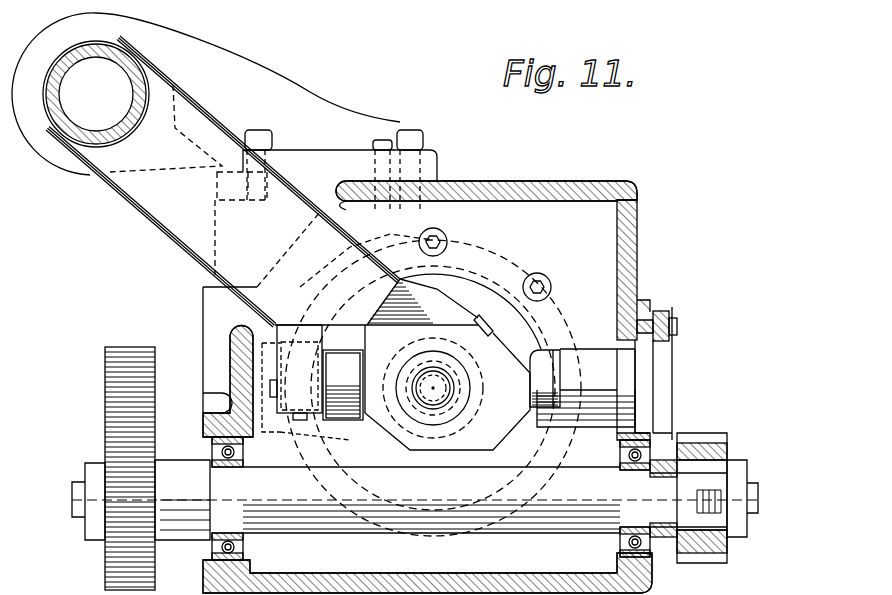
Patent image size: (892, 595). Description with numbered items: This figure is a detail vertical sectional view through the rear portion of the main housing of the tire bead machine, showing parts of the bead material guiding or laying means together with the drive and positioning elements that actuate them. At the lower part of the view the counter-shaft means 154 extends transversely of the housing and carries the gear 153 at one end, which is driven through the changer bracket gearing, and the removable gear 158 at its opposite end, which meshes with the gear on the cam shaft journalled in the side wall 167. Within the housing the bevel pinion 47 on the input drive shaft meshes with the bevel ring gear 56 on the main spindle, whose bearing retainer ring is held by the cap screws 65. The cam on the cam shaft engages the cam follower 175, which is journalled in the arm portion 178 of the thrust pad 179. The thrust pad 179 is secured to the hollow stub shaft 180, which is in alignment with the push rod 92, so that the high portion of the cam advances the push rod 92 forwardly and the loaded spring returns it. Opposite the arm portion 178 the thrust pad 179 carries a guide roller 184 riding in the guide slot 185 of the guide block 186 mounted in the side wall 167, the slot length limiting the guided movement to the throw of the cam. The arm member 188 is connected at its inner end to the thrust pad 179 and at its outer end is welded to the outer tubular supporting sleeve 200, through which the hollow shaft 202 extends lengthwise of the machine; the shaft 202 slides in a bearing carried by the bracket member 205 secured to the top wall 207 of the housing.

The bevel pinion 47 is at (308, 437).
The bevel ring gear 56 is at (537, 272).
The cap screws 65 is at (447, 240).
The push rod 92 is at (437, 395).
The gear 153 is at (104, 385).
The counter-shaft means 154 is at (300, 500).
The gear 158 is at (730, 443).
The side wall 167 is at (634, 265).
The cam follower 175 is at (355, 366).
The arm portion 178 is at (322, 333).
The thrust pad 179 is at (500, 348).
The hollow stub shaft 180 is at (470, 403).
The guide roller 184 is at (552, 386).
The guide slot 185 is at (547, 370).
The guide block 186 is at (628, 382).
The arm member 188 is at (158, 228).
The outer tubular supporting sleeve 200 is at (103, 44).
The hollow shaft 202 is at (138, 76).
The bracket member 205 is at (342, 157).
The top wall 207 is at (533, 186).